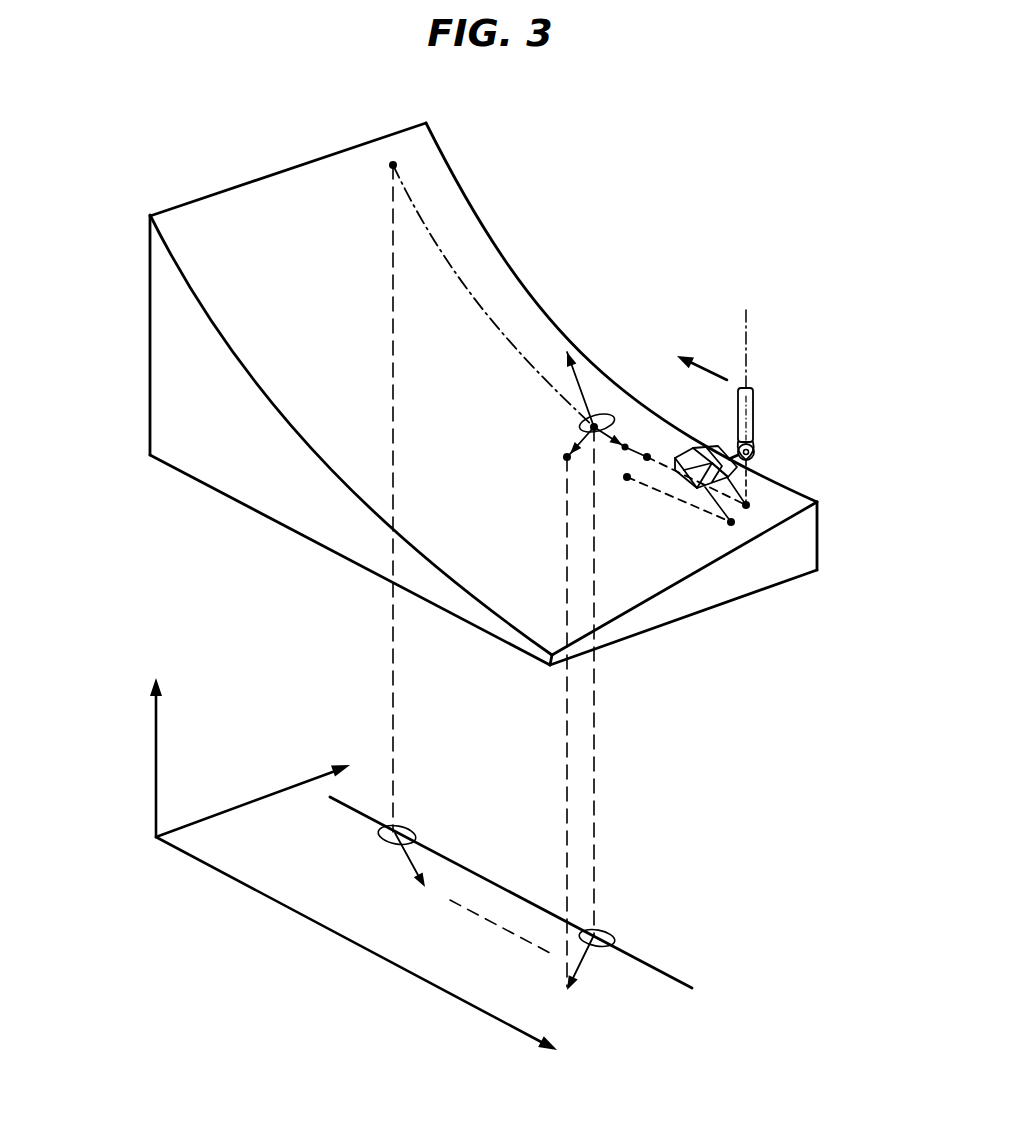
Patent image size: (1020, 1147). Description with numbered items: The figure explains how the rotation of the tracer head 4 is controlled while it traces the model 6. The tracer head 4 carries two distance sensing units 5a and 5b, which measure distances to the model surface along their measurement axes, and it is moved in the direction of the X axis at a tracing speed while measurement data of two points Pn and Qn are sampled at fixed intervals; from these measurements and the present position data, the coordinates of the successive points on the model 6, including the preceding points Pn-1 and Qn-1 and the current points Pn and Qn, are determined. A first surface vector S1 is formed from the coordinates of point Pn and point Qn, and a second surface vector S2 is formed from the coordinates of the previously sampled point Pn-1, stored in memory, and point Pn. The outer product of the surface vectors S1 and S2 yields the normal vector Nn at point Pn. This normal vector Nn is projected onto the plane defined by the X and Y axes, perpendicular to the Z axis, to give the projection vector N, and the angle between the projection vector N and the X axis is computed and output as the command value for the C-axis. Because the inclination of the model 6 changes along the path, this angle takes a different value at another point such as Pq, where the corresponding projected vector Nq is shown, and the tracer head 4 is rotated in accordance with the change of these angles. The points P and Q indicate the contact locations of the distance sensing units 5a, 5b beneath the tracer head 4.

The model 6 is at (236, 188).
The tracer head 4 is at (757, 428).
The distance sensing unit 5a is at (747, 478).
The distance sensing unit 5b is at (700, 490).
The point Pq is at (391, 160).
The point Pn is at (596, 420).
The point Pn−1 Pn-1 is at (650, 455).
The point Qn is at (564, 458).
The point Qn−1 Qn-1 is at (630, 484).
The normal vector Nn is at (576, 370).
The surface vector S1 is at (580, 422).
The surface vector S2 is at (622, 440).
The contact point P is at (747, 509).
The contact point Q is at (731, 526).
The X-axis X is at (366, 955).
The Y-axis Y is at (262, 791).
The Z-axis Z is at (155, 741).
The projected normal vector at Pq Nq is at (402, 856).
The projection vector N is at (594, 942).